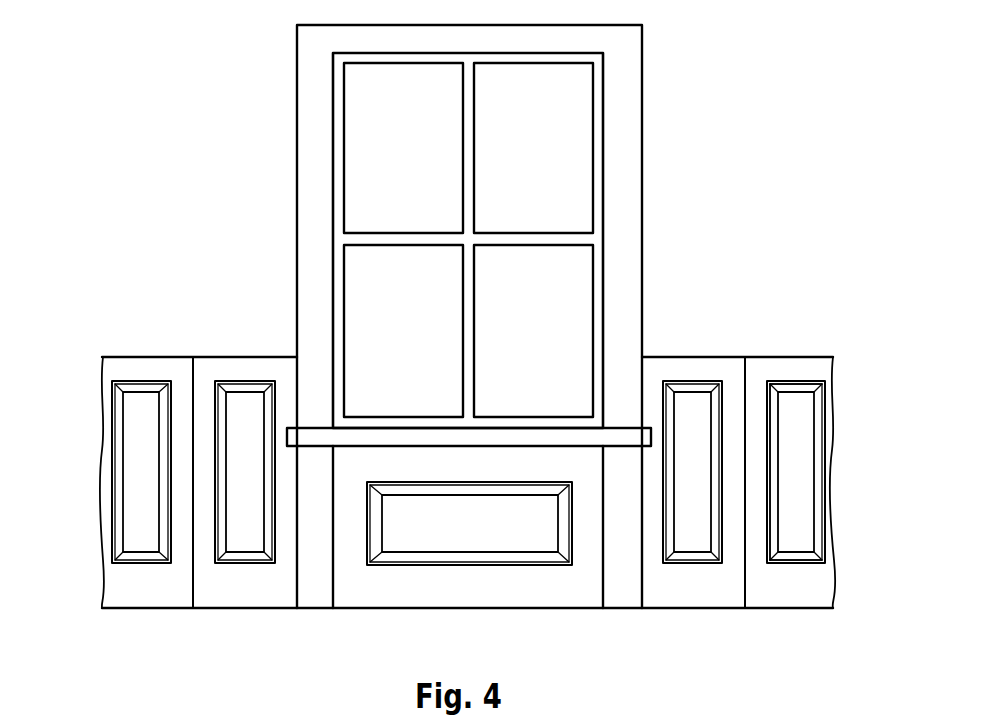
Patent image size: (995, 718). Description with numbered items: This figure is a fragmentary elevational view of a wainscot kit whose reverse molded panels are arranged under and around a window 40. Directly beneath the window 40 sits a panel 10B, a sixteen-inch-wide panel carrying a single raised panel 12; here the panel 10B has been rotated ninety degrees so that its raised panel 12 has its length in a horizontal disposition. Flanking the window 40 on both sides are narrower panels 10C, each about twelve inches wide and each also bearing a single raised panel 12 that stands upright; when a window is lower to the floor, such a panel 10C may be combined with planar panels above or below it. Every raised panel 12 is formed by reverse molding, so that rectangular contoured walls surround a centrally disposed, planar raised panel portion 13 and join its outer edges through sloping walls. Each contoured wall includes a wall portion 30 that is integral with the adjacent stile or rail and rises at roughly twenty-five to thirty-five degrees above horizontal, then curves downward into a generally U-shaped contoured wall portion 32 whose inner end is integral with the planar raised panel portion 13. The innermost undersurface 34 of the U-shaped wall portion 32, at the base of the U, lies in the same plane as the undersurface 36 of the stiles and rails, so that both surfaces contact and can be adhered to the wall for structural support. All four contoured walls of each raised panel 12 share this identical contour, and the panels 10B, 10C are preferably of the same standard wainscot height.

The panel 10B is at (370, 590).
The panel 10C is at (148, 367).
The raised panel 12 is at (108, 515).
The planar raised panel portion 13 is at (141, 472).
The wall portion 30 is at (815, 412).
The U-shaped contoured wall portion 32 is at (796, 563).
The innermost undersurface 34 is at (766, 543).
The undersurface of the stiles and rails 36 is at (797, 382).
The window 40 is at (575, 132).